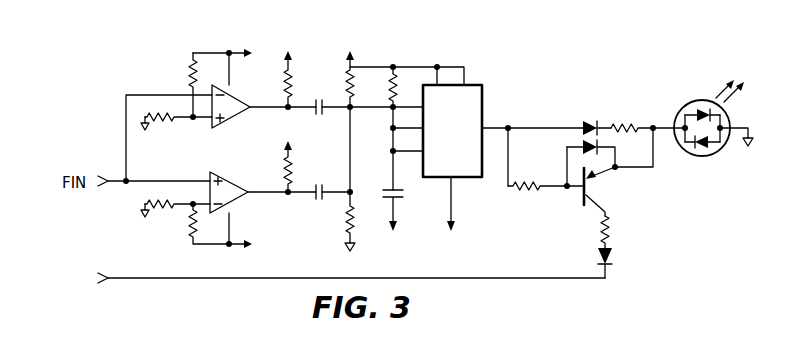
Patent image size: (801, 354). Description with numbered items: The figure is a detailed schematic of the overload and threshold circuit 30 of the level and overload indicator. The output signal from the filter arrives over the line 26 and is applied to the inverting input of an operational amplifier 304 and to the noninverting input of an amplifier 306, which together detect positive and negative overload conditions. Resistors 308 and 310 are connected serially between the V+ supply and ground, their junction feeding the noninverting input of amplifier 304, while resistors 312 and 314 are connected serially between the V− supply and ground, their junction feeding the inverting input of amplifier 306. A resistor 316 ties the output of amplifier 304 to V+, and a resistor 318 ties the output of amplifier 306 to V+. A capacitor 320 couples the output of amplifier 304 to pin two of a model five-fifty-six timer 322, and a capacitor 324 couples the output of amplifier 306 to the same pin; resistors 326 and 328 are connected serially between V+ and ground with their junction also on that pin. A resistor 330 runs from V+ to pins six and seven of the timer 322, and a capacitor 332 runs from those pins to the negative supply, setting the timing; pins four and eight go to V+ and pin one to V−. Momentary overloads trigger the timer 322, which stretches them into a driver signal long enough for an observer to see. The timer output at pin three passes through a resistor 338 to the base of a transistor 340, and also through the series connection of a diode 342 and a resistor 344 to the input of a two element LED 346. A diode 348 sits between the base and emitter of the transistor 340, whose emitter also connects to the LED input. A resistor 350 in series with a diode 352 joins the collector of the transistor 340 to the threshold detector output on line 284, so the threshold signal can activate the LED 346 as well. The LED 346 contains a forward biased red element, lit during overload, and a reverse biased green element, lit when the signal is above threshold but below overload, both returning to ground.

The line 26 is at (124, 172).
The overload and threshold circuit 30 is at (578, 65).
The line 284 is at (212, 284).
The operational amplifier 304 is at (238, 92).
The amplifier 306 is at (233, 183).
The resistor 308 is at (190, 70).
The resistor 310 is at (164, 124).
The resistor 312 is at (186, 238).
The resistor 314 is at (162, 214).
The resistor 316 is at (294, 78).
The resistor 318 is at (284, 162).
The capacitor 320 is at (319, 115).
The timer 322 is at (483, 106).
The capacitor 324 is at (316, 200).
The resistor 326 is at (348, 90).
The resistor 328 is at (345, 222).
The resistor 330 is at (396, 74).
The capacitor 332 is at (403, 194).
The resistor 338 is at (524, 194).
The transistor 340 is at (579, 200).
The diode 342 is at (595, 98).
The resistor 344 is at (622, 122).
The two element LED 346 is at (727, 114).
The diode 348 is at (581, 142).
The resistor 350 is at (612, 231).
The diode 352 is at (612, 253).